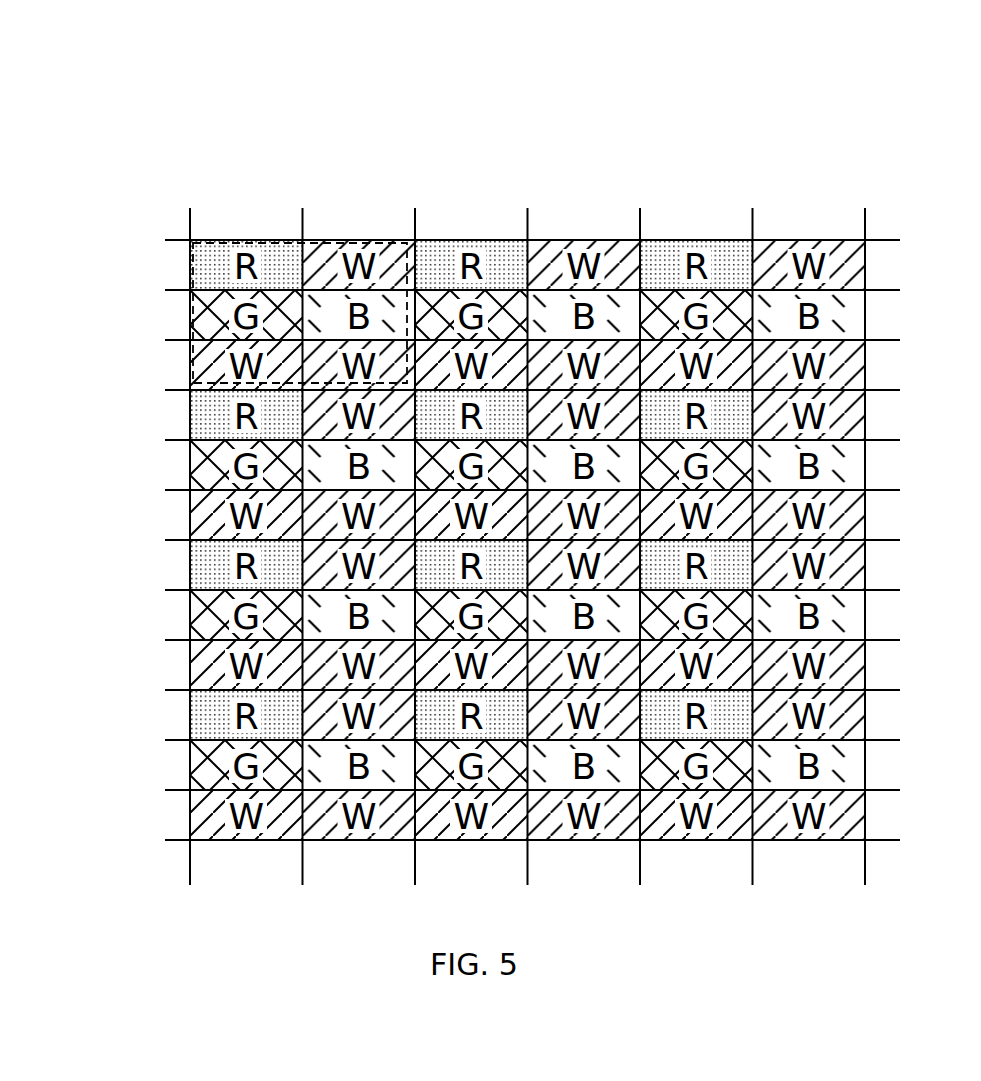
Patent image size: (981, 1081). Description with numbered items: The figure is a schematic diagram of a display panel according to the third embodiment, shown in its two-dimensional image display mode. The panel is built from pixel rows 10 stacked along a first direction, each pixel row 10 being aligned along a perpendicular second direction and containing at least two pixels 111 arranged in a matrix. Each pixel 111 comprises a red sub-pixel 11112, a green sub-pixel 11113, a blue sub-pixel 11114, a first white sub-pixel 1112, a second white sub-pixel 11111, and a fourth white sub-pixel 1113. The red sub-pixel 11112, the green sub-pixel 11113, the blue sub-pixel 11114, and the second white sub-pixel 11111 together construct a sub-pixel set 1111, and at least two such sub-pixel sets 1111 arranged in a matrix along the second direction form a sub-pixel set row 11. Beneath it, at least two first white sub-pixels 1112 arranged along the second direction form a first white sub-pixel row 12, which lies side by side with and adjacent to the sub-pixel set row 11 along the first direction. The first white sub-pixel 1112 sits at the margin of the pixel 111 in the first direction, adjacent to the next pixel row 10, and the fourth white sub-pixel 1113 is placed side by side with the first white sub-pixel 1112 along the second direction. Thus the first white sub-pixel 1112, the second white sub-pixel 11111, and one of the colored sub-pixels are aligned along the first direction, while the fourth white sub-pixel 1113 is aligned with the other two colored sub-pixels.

The pixel row 10 is at (469, 447).
The sub-pixel set row 11 is at (167, 335).
The first white sub-pixel row 12 is at (476, 365).
The pixel 111 is at (295, 221).
The sub-pixel set 1111 is at (295, 221).
The first white sub-pixel 1112 is at (480, 246).
The fourth white sub-pixel 1113 is at (228, 340).
The second white sub-pixel 11111 is at (332, 265).
The red sub-pixel 11112 is at (277, 273).
The green sub-pixel 11113 is at (298, 302).
The blue sub-pixel 11114 is at (387, 298).